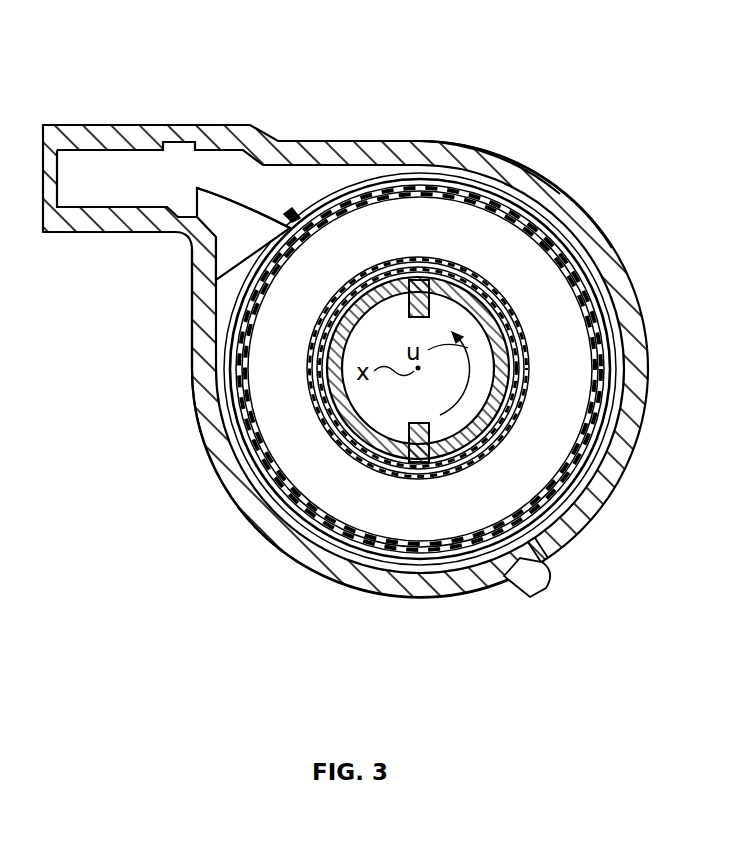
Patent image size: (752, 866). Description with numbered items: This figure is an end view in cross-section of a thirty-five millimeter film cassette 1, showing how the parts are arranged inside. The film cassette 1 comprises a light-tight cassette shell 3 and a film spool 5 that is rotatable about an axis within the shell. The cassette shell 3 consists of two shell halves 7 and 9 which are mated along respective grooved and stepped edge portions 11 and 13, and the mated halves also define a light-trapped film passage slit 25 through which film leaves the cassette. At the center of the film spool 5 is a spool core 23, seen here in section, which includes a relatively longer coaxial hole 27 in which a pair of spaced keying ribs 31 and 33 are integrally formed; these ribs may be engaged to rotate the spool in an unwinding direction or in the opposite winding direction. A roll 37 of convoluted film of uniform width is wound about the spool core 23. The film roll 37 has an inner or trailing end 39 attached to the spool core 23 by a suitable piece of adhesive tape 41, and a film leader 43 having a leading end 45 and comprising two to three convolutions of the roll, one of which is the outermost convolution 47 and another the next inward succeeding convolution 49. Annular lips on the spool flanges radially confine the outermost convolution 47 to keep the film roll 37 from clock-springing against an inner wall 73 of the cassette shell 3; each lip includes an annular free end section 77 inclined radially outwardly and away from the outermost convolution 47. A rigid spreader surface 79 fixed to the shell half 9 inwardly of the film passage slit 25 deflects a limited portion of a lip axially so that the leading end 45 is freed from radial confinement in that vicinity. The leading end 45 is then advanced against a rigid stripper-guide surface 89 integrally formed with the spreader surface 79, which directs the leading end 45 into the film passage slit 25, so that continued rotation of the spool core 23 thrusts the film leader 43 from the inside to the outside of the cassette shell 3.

The film cassette 1 is at (200, 104).
The cassette shell 3 is at (612, 502).
The film spool 5 is at (606, 384).
The shell half 7 is at (388, 140).
The shell half 9 is at (437, 603).
The grooved and stepped edge portion 11 is at (524, 592).
The grooved and stepped edge portion 13 is at (520, 570).
The spool core 23 is at (512, 381).
The film passage slit 25 is at (94, 184).
The longer coaxial hole 27 is at (484, 337).
The keying rib 31 is at (410, 312).
The keying rib 33 is at (412, 428).
The film roll 37 is at (252, 487).
The trailing end 39 is at (318, 402).
The adhesive tape 41 is at (318, 367).
The film leader 43 is at (336, 190).
The leading end 45 is at (290, 212).
The outermost convolution 47 is at (541, 232).
The next inward succeeding convolution 49 is at (564, 257).
The inner wall 73 is at (229, 392).
The annular free end section 77 is at (226, 360).
The spreader surface 79 is at (238, 237).
The stripper-guide surface 89 is at (233, 204).